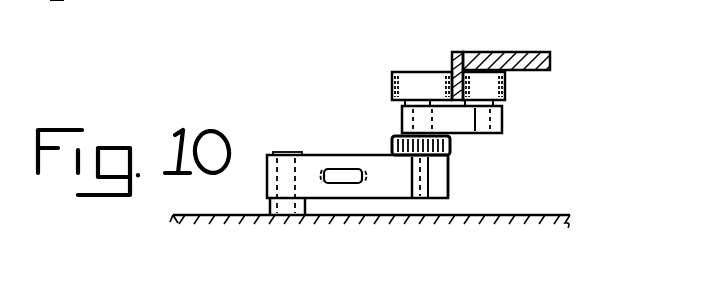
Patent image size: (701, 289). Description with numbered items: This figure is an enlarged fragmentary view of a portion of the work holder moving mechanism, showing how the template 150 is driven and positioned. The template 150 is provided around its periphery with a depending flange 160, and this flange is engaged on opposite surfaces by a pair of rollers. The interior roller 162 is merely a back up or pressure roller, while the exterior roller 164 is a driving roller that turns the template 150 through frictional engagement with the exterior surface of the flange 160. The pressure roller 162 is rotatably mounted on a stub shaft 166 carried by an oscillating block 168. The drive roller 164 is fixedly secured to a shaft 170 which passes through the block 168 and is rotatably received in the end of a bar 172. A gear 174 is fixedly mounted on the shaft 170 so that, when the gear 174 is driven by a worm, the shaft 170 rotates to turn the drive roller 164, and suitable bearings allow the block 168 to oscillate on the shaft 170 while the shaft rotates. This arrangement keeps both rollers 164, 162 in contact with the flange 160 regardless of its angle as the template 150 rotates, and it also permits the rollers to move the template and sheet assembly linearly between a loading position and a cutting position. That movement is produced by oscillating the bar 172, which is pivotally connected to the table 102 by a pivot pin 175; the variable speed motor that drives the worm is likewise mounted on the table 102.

The table 102 is at (550, 215).
The template 150 is at (497, 53).
The depending flange 160 is at (453, 67).
The interior roller 162 is at (507, 85).
The exterior roller 164 is at (392, 79).
The stub shaft 166 is at (505, 121).
The oscillating block 168 is at (459, 133).
The shaft 170 is at (402, 112).
The bar 172 is at (448, 181).
The gear 174 is at (392, 143).
The pivot pin 175 is at (285, 151).